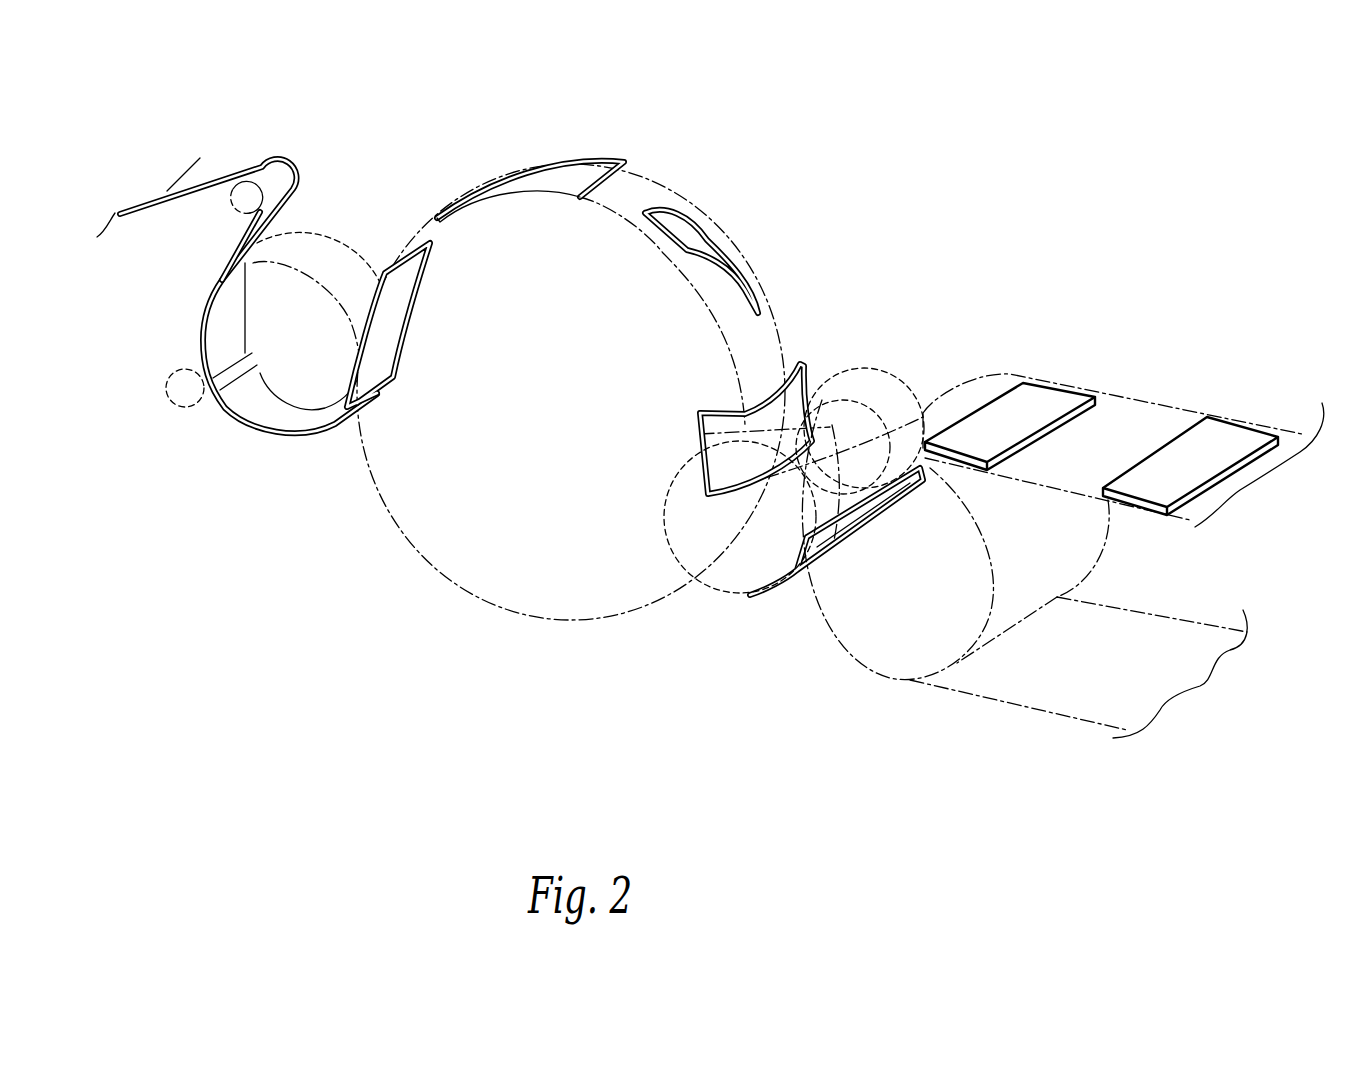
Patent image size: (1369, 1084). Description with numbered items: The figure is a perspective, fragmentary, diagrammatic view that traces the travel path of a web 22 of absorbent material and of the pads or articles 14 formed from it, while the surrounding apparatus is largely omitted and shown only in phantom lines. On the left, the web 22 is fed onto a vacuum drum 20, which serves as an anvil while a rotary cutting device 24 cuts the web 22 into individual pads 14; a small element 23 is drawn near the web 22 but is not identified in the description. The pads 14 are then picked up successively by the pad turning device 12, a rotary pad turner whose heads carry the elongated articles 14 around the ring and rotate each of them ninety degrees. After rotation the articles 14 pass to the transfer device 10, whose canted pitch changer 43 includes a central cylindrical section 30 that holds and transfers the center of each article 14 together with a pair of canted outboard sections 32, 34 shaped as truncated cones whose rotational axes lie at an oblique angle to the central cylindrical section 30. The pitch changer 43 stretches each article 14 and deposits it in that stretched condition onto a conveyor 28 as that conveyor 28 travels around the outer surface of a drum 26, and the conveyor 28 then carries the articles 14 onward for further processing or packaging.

The transfer device 10 is at (952, 332).
The pad turning device 12 is at (651, 612).
The articles 14 is at (266, 412).
The vacuum drum 20 is at (337, 254).
The web 22 is at (218, 170).
The loop 23 is at (238, 205).
The rotary cutting device 24 is at (180, 382).
The drum 26 is at (868, 635).
The conveyor 28 is at (1115, 427).
The central cylindrical section 30 is at (842, 398).
The canted outboard section 32 is at (745, 512).
The canted outboard section 34 is at (880, 390).
The canted pitch changer 43 is at (738, 598).